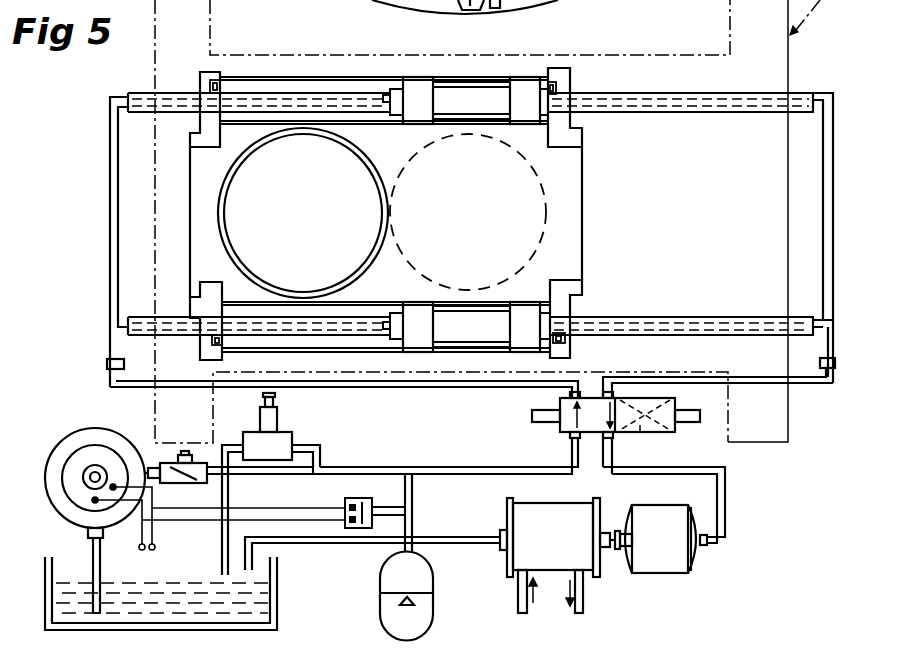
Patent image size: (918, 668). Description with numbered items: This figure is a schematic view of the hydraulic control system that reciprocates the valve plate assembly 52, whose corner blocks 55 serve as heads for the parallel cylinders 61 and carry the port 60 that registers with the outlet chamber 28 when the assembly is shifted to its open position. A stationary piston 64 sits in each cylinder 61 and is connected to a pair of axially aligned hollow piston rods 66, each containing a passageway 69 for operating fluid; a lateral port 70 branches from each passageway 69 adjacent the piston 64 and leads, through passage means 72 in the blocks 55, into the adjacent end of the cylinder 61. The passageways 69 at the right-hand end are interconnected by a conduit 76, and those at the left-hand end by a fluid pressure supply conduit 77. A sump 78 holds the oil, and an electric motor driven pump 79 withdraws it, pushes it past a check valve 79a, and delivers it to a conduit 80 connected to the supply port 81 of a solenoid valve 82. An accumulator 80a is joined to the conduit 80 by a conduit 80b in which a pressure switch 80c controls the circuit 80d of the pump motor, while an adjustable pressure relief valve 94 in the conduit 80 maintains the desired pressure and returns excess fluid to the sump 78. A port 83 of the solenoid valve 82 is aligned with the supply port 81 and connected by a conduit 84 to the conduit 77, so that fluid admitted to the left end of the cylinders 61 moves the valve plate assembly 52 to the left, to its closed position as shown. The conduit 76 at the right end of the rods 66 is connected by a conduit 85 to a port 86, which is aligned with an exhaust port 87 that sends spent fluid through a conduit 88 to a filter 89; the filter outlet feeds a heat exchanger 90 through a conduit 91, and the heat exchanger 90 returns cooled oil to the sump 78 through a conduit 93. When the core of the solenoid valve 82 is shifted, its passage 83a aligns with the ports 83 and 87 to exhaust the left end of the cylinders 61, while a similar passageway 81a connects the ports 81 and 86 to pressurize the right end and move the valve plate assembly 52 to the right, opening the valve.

The outlet chamber 28 is at (519, 213).
The valve plate assembly 52 is at (584, 192).
The block 55 is at (578, 140).
The port 60 is at (358, 172).
The cylinder 61 is at (322, 77).
The stationary piston 64 is at (446, 108).
The piston rod 66 is at (175, 93).
The passageway 69 is at (752, 110).
The lateral port 70 is at (388, 90).
The passage means 72 is at (216, 72).
The conduit 76 is at (836, 172).
The fluid pressure supply conduit 77 is at (110, 268).
The sump 78 is at (270, 592).
The electric motor driven pump 79 is at (60, 465).
The check valve 79a is at (150, 466).
The conduit 80 is at (460, 465).
The accumulator 80a is at (425, 610).
The conduit 80b is at (412, 522).
The pressure switch 80c is at (340, 500).
The circuit 80d is at (170, 510).
The supply port 81 is at (570, 436).
The passageway 81a is at (652, 372).
The solenoid valve 82 is at (700, 420).
The port 83 is at (570, 398).
The passage 83a is at (640, 434).
The conduit 84 is at (106, 382).
The conduit 85 is at (831, 386).
The port 86 is at (647, 398).
The exhaust port 87 is at (607, 455).
The conduit 88 is at (726, 478).
The filter 89 is at (660, 565).
The heat exchanger 90 is at (507, 553).
The conduit 91 is at (612, 550).
The conduit 93 is at (292, 545).
The adjustable pressure relief valve 94 is at (277, 416).